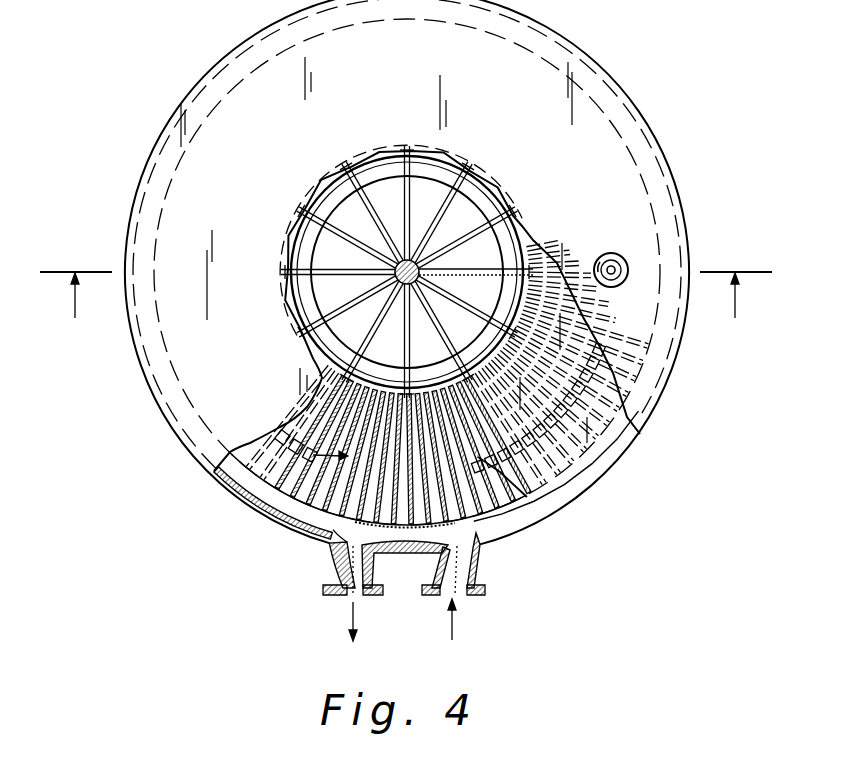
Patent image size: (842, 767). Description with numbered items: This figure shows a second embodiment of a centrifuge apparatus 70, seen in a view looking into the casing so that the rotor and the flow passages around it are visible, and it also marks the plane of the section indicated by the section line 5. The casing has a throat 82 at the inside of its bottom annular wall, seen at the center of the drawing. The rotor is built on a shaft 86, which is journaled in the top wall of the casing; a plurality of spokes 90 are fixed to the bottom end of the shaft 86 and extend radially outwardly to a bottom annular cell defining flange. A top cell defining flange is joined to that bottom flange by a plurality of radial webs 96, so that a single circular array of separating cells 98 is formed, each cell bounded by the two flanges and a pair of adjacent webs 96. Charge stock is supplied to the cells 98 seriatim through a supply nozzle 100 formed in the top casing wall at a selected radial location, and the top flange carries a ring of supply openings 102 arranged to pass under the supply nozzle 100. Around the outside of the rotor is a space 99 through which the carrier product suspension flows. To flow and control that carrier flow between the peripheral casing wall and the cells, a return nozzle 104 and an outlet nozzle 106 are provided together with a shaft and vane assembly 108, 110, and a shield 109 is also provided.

The centrifuge apparatus 70 is at (130, 187).
The throat 82 is at (315, 246).
The shaft 86 is at (445, 258).
The spokes 90 is at (440, 213).
The radial webs 96 is at (498, 532).
The separating cells 98 is at (390, 378).
The space 99 is at (272, 497).
The supply nozzle 100 is at (608, 248).
The supply openings 102 is at (598, 356).
The return nozzle 104 is at (472, 572).
The outlet nozzle 106 is at (337, 570).
The shaft and vane assembly 108 is at (376, 552).
The shield 109 is at (333, 541).
The shaft and vane assembly 110 is at (428, 562).
The section line 5- 5 is at (406, 307).